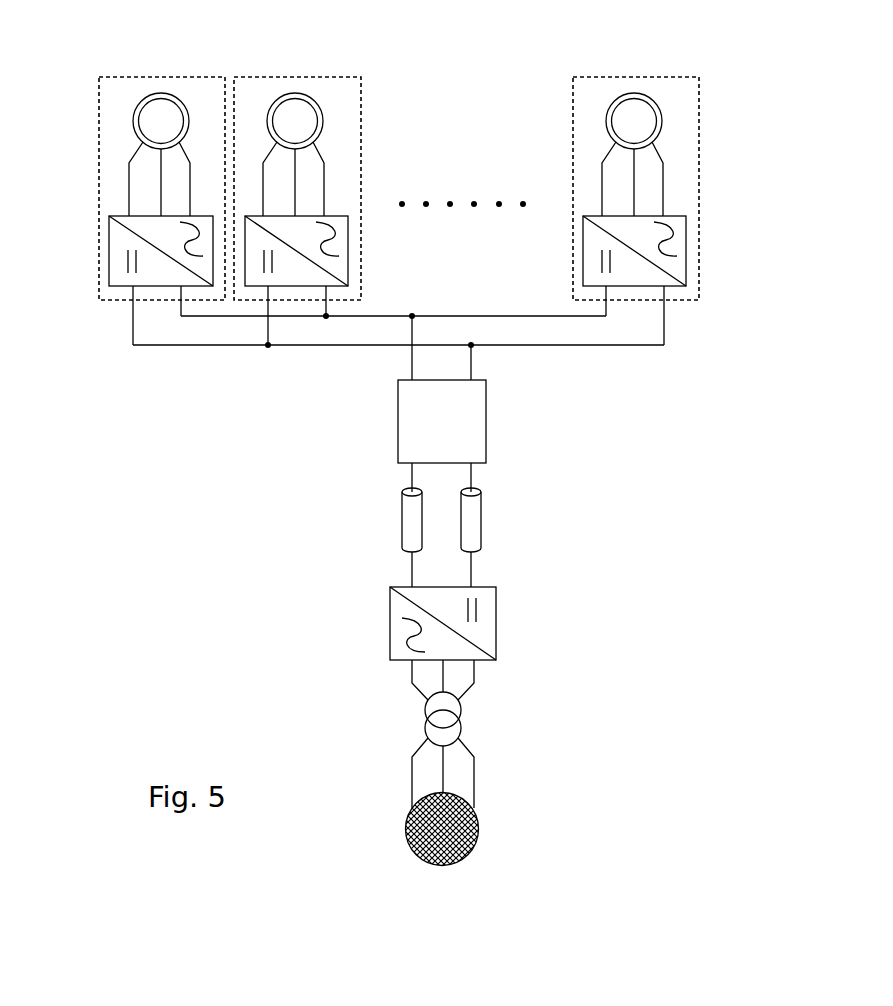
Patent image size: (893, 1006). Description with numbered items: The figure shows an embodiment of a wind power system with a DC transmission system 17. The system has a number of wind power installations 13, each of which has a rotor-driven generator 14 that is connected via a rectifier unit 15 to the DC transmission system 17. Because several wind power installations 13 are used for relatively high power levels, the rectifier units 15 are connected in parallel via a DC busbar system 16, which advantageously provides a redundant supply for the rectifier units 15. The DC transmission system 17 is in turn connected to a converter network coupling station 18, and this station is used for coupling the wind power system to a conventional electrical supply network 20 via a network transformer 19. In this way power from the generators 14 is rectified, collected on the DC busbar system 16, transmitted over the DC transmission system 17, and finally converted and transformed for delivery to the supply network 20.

The wind power installation 13 is at (115, 76).
The rotor-driven generator 14 is at (183, 97).
The rectifier unit 15 is at (110, 252).
The DC busbar system 16 is at (495, 332).
The DC transmission system 17 is at (448, 517).
The converter network coupling station 18 is at (496, 621).
The network transformer 19 is at (468, 718).
The electrical supply network 20 is at (480, 825).